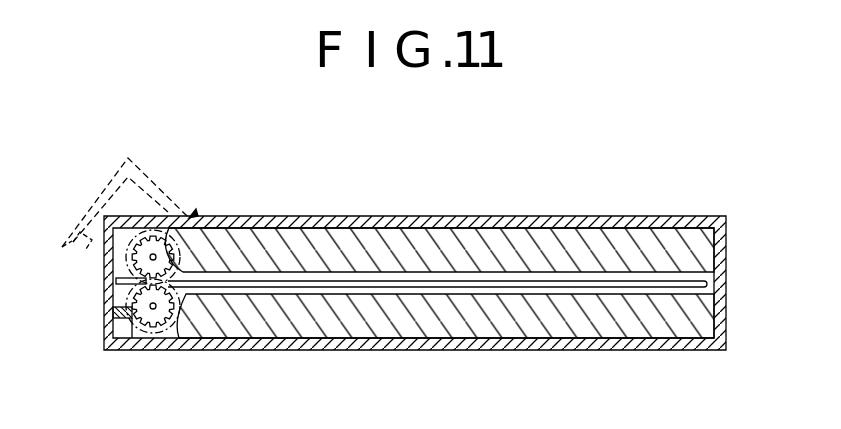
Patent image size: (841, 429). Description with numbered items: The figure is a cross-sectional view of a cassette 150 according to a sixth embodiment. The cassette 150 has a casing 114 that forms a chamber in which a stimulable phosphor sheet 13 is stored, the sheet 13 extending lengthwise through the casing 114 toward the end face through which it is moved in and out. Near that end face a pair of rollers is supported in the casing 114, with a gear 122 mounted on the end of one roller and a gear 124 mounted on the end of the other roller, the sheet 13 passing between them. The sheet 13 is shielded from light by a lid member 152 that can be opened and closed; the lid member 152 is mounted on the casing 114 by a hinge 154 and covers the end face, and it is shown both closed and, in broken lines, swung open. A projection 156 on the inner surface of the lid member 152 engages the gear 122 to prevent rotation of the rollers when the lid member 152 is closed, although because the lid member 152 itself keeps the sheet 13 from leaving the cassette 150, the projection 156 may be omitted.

The stimulable phosphor sheet 13 is at (727, 280).
The casing 114 is at (649, 218).
The gear 122 is at (156, 320).
The gear 124 is at (137, 226).
The cassette 150 is at (447, 201).
The lid member 152 is at (102, 191).
The hinge 154 is at (193, 213).
The projection 156 is at (78, 256).